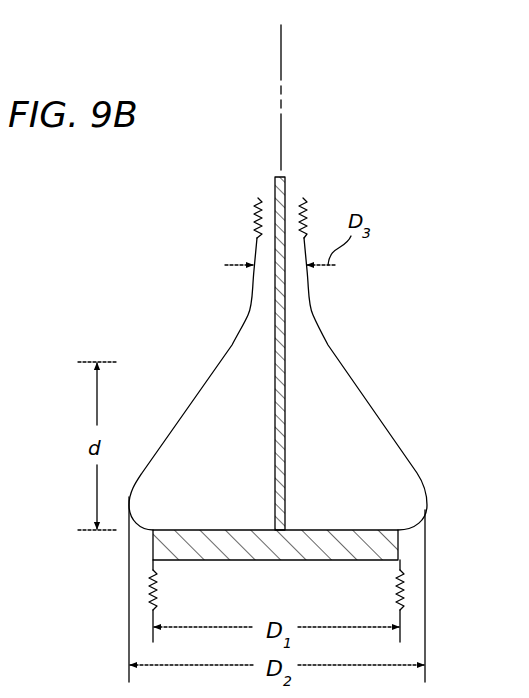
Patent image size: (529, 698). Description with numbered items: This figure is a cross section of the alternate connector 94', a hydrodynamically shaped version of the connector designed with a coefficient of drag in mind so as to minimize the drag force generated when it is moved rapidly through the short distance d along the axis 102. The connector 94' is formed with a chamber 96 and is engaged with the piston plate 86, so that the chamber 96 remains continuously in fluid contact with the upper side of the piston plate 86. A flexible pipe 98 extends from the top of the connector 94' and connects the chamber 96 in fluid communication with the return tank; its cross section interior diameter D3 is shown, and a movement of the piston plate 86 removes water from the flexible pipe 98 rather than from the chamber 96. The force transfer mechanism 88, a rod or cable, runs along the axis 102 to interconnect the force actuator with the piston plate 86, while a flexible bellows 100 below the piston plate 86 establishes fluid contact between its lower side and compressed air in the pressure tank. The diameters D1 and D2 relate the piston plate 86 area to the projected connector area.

The axis 102 is at (283, 40).
The force transfer mechanism 88 is at (287, 184).
The flexible pipe 98 is at (256, 212).
The connector (alternate embodiment) 94' is at (278, 384).
The chamber 96 is at (232, 493).
The piston plate 86 is at (369, 530).
The flexible bellows 100 is at (407, 588).